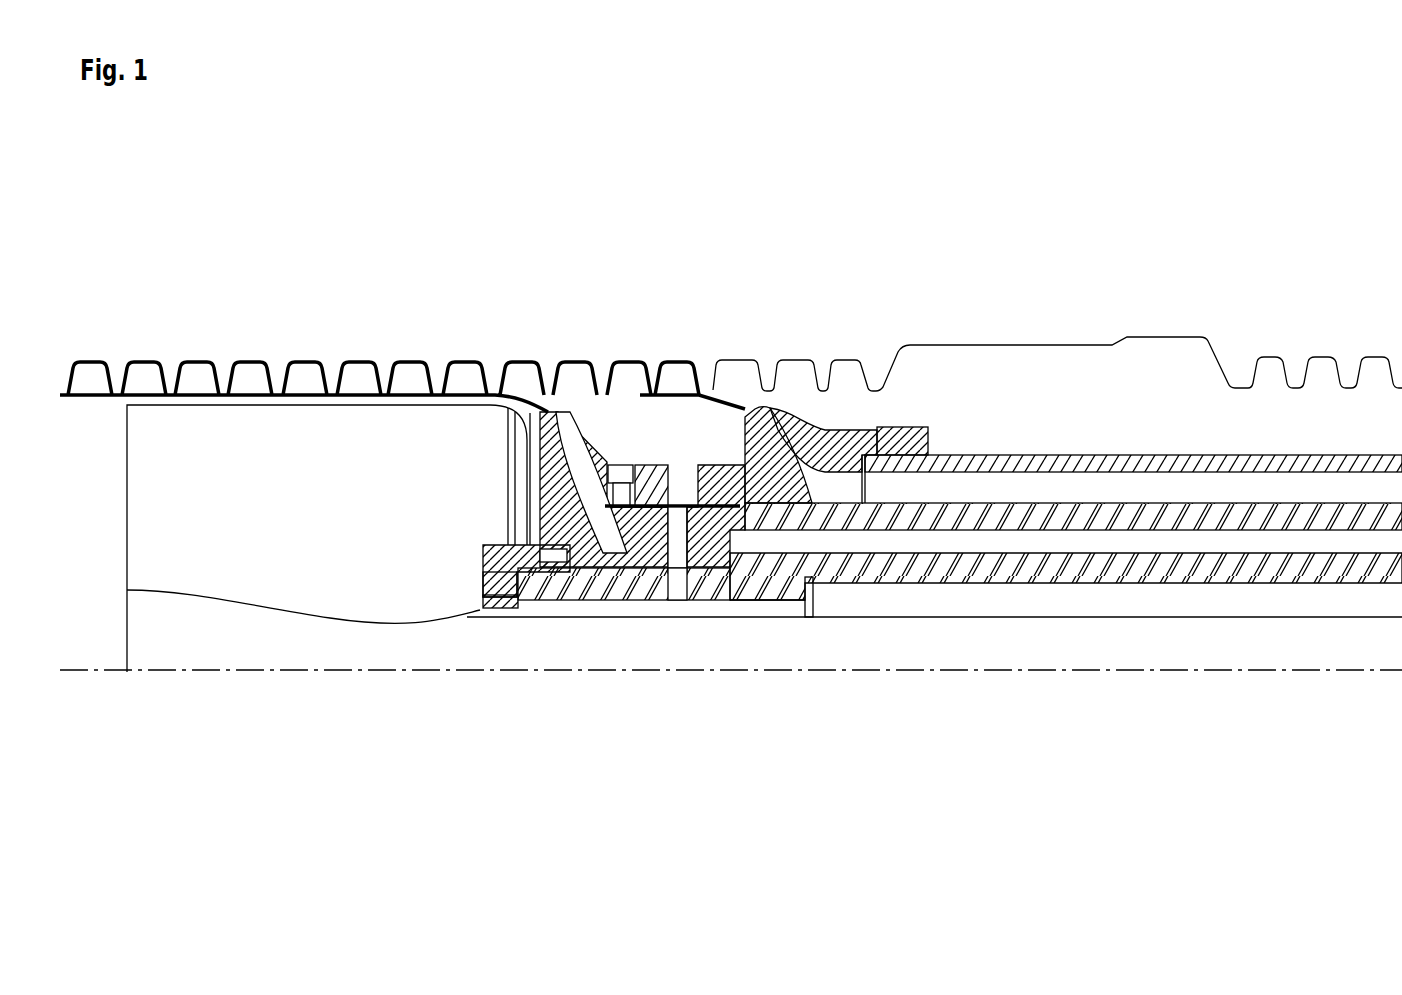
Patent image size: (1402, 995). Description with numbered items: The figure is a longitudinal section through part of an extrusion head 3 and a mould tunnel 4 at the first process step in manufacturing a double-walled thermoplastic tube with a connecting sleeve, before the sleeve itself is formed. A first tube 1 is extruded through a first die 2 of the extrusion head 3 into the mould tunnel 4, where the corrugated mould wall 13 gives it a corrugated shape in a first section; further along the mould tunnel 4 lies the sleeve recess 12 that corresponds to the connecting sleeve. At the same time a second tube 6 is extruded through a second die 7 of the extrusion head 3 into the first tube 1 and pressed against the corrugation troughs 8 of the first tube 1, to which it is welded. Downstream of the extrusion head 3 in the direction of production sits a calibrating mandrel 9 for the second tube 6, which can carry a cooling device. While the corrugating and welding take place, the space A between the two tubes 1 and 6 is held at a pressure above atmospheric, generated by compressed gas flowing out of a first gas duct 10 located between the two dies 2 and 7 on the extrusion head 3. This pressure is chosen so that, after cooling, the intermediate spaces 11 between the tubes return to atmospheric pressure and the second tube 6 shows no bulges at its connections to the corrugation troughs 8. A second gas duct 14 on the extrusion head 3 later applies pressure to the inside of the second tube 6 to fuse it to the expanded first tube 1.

The first tube 1 is at (727, 400).
The first die 2 is at (762, 412).
The extrusion head 3 is at (833, 418).
The mould tunnel 4 is at (947, 327).
The second tube 6 is at (526, 412).
The second die 7 is at (560, 415).
The corrugation troughs 8 is at (650, 392).
The calibrating mandrel 9 is at (429, 447).
The first gas duct 10 is at (678, 487).
The intermediate spaces 11 is at (358, 373).
The sleeve recess 12 is at (1027, 343).
The corrugated mould wall 13 is at (842, 360).
The second gas duct 14 is at (513, 477).
The space between the two tubes A is at (653, 433).